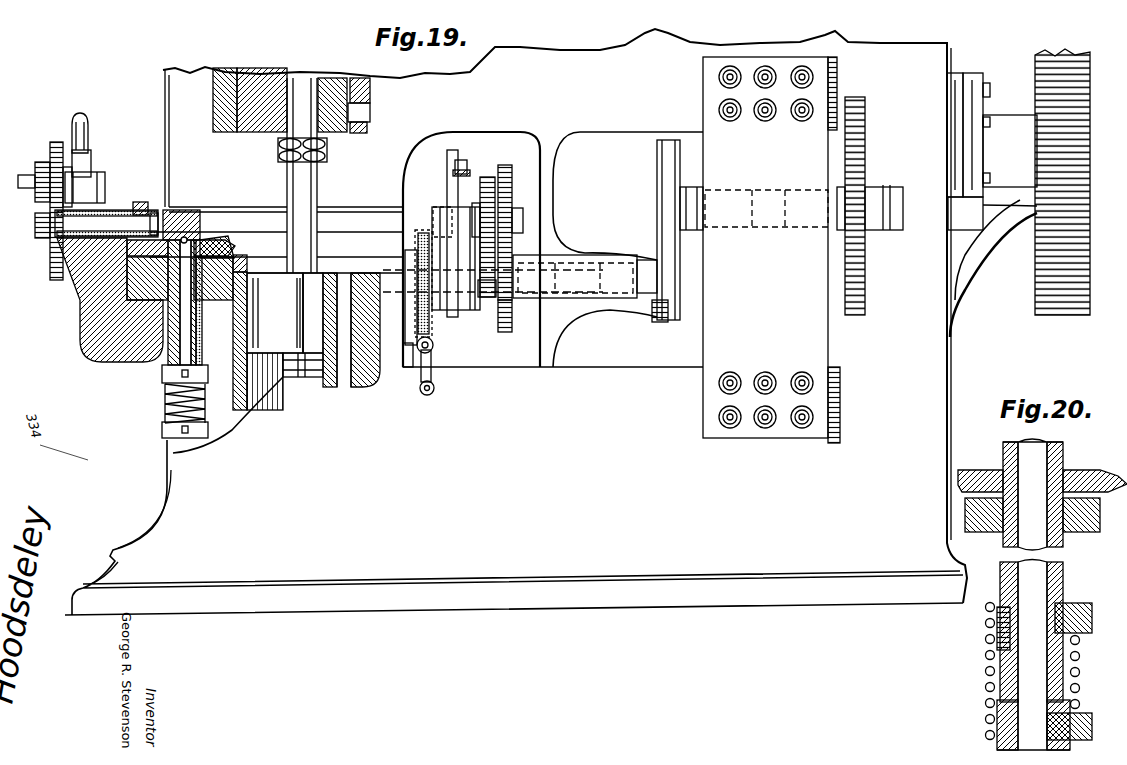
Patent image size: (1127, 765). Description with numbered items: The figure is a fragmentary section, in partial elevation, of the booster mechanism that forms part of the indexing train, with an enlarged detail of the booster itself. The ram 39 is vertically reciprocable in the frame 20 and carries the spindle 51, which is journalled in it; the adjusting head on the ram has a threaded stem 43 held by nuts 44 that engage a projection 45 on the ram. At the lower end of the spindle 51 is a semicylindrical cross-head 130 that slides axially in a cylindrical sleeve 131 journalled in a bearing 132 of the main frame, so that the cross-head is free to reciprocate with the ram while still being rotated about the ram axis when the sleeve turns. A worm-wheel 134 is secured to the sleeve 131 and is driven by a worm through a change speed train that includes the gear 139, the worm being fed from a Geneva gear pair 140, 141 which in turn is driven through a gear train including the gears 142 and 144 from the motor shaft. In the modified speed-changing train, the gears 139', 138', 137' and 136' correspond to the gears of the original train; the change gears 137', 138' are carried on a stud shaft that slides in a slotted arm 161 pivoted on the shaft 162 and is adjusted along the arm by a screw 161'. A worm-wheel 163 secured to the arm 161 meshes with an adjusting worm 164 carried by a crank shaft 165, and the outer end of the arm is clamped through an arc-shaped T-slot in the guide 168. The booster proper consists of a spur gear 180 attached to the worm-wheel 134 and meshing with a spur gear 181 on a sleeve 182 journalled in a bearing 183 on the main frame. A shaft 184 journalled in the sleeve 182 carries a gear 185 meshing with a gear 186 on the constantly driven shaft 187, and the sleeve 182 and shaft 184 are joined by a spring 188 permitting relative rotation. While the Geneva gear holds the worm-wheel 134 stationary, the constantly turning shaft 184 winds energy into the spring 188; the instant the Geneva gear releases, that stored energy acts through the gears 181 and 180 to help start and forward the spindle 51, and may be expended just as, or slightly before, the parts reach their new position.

In FIG. 19, the main frame 20 is at (950, 387).
In FIG. 19, the ram 39 is at (262, 133).
In FIG. 19, the threaded stem 43 is at (357, 135).
In FIG. 19, the nuts 44 is at (370, 118).
In FIG. 19, the projection 45 is at (370, 97).
In FIG. 19, the spindle 51 is at (318, 205).
In FIG. 19, the semicylindrical cross-head 130 is at (285, 341).
In FIG. 19, the cylindrical sleeve 131 is at (262, 402).
In FIG. 19, the bearing 132 is at (247, 310).
In FIG. 19, the worm-wheel 134 is at (240, 267).
In FIG. 19, the gear 136' is at (498, 334).
In FIG. 19, the change gear 137' is at (486, 219).
In FIG. 19, the change gear 138' is at (530, 205).
In FIG. 19, the gear 139 is at (351, 356).
In FIG. 19, the gear 139' is at (533, 348).
In FIG. 19, the Geneva gear 140 is at (663, 327).
In FIG. 19, the Geneva gear 141 is at (658, 182).
In FIG. 19, the gear 142 is at (856, 316).
In FIG. 19, the gear 144 is at (1065, 317).
In FIG. 19, the slotted arm 161 is at (473, 209).
In FIG. 19, the screw 161' is at (420, 170).
In FIG. 19, the shaft 162 is at (470, 322).
In FIG. 19, the worm-wheel 163 is at (402, 338).
In FIG. 19, the adjusting worm 164 is at (435, 352).
In FIG. 19, the crank shaft 165 is at (437, 375).
In FIG. 19, the guide 168 is at (435, 160).
In FIG. 19, the spur gear 180 is at (247, 250).
In FIG. 19, the spur gear 181 is at (155, 268).
In FIG. 20, the spur gear 181 is at (1097, 535).
In FIG. 19, the sleeve 182 is at (163, 362).
In FIG. 20, the sleeve 182 is at (1000, 598).
In FIG. 19, the bearing 183 is at (85, 320).
In FIG. 19, the shaft 184 is at (182, 232).
In FIG. 20, the shaft 184 is at (1040, 437).
In FIG. 19, the gear 185 is at (217, 240).
In FIG. 20, the gear 185 is at (1104, 470).
In FIG. 19, the gear 186 is at (138, 202).
In FIG. 19, the constantly driven shaft 187 is at (107, 225).
In FIG. 19, the spring 188 is at (163, 404).
In FIG. 20, the spring 188 is at (985, 686).